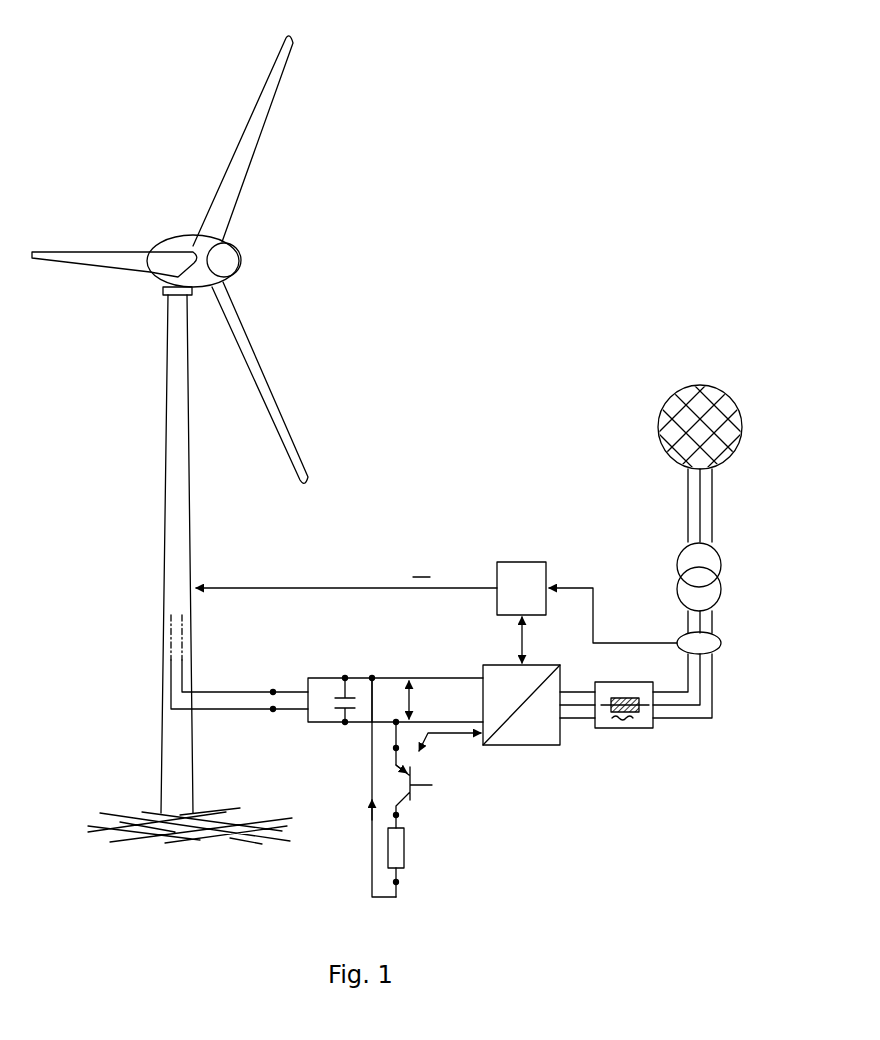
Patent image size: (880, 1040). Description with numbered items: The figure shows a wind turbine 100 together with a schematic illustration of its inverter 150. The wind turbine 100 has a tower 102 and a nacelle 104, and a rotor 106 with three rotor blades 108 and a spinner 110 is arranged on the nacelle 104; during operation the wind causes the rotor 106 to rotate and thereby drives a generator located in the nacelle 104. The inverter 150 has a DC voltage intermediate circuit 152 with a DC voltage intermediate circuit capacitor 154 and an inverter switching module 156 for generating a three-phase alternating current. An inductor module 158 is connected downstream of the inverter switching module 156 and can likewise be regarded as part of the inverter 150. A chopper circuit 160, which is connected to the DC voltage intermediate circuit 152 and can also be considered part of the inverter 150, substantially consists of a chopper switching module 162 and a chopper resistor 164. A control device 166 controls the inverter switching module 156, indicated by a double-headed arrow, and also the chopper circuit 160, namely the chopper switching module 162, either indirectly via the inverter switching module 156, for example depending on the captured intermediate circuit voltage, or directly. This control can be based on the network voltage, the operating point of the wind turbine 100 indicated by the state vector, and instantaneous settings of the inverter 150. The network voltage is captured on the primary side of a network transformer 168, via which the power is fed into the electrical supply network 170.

The wind turbine 100 is at (140, 338).
The tower 102 is at (184, 502).
The nacelle 104 is at (178, 243).
The rotor 106 is at (280, 207).
The rotor blades 108 is at (262, 113).
The spinner 110 is at (225, 257).
The inverter 150 is at (552, 798).
The DC voltage intermediate circuit 152 is at (330, 665).
The DC voltage intermediate circuit capacitor 154 is at (351, 696).
The inverter switching module 156 is at (561, 745).
The inductor module 158 is at (640, 730).
The chopper circuit 160 is at (441, 824).
The chopper switching module 162 is at (430, 774).
The chopper resistor 164 is at (404, 850).
The control device 166 is at (510, 566).
The network transformer 168 is at (676, 560).
The electrical supply network 170 is at (680, 403).